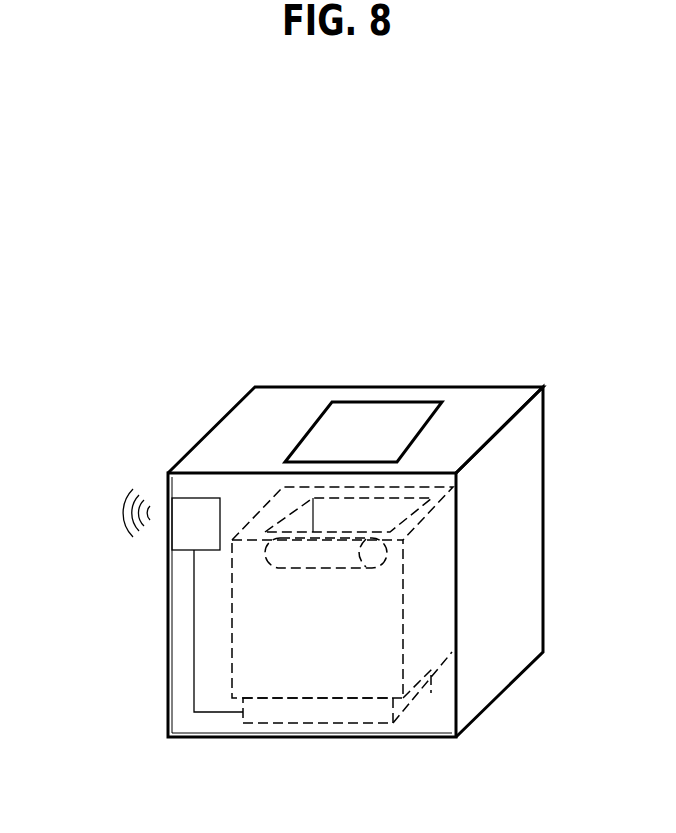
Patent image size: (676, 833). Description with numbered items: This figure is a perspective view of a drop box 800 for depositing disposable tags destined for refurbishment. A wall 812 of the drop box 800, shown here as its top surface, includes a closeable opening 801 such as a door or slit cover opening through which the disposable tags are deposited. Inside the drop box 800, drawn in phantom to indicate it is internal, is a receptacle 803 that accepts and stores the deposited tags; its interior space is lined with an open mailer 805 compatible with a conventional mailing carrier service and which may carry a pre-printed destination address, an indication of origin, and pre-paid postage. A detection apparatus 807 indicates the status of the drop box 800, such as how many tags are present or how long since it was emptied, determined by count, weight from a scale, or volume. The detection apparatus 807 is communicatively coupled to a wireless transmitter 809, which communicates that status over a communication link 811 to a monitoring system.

The drop box 800 is at (350, 89).
The closeable opening 801 is at (372, 400).
The receptacle 803 is at (338, 650).
The open mailer 805 is at (338, 561).
The detection apparatus 807 is at (293, 720).
The wireless transmitter 809 is at (183, 537).
The communication link 811 is at (128, 497).
The wall 812 is at (273, 407).